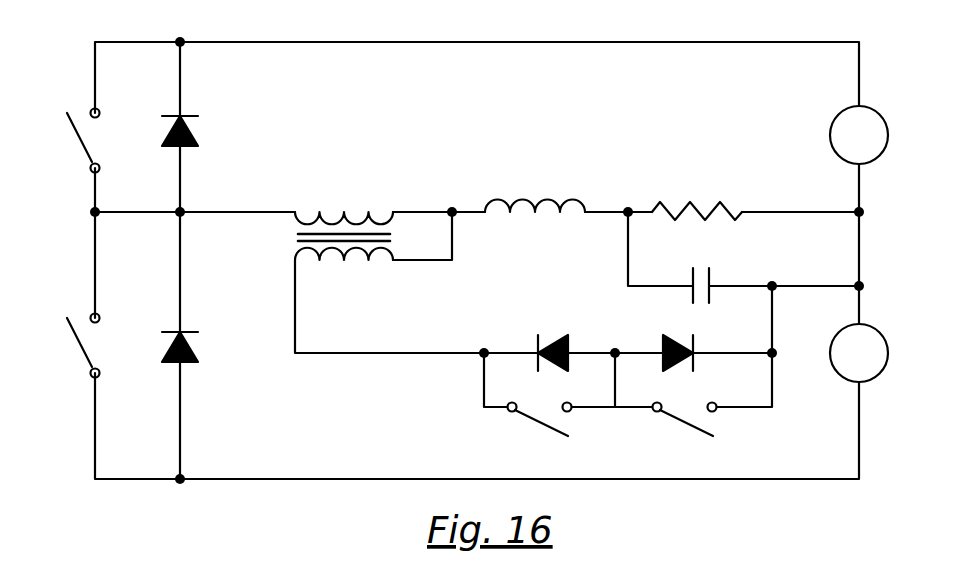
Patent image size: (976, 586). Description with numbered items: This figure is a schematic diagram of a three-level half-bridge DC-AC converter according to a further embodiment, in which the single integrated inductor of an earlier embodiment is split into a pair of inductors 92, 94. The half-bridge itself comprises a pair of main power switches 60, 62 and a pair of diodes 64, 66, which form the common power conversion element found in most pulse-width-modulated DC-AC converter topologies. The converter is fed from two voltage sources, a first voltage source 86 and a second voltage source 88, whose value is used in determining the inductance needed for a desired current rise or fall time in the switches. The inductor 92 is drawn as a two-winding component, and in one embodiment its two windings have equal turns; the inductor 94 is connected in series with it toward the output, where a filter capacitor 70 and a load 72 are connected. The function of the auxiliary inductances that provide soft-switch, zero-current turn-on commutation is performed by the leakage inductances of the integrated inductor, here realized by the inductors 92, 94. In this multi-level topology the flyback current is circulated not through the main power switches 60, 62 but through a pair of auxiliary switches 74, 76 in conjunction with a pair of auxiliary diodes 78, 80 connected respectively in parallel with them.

The main power switch 60 is at (80, 140).
The main power switch 62 is at (80, 345).
The diode 64 is at (190, 114).
The diode 66 is at (190, 330).
The filter capacitor 70 is at (711, 277).
The load 72 is at (693, 206).
The auxiliary switch 74 is at (544, 429).
The auxiliary switch 76 is at (690, 429).
The auxiliary diode 78 is at (535, 341).
The auxiliary diode 80 is at (697, 341).
The voltage source V1 86 is at (885, 119).
The voltage source V2 88 is at (886, 332).
The inductor 92 is at (365, 192).
The inductor 94 is at (536, 214).